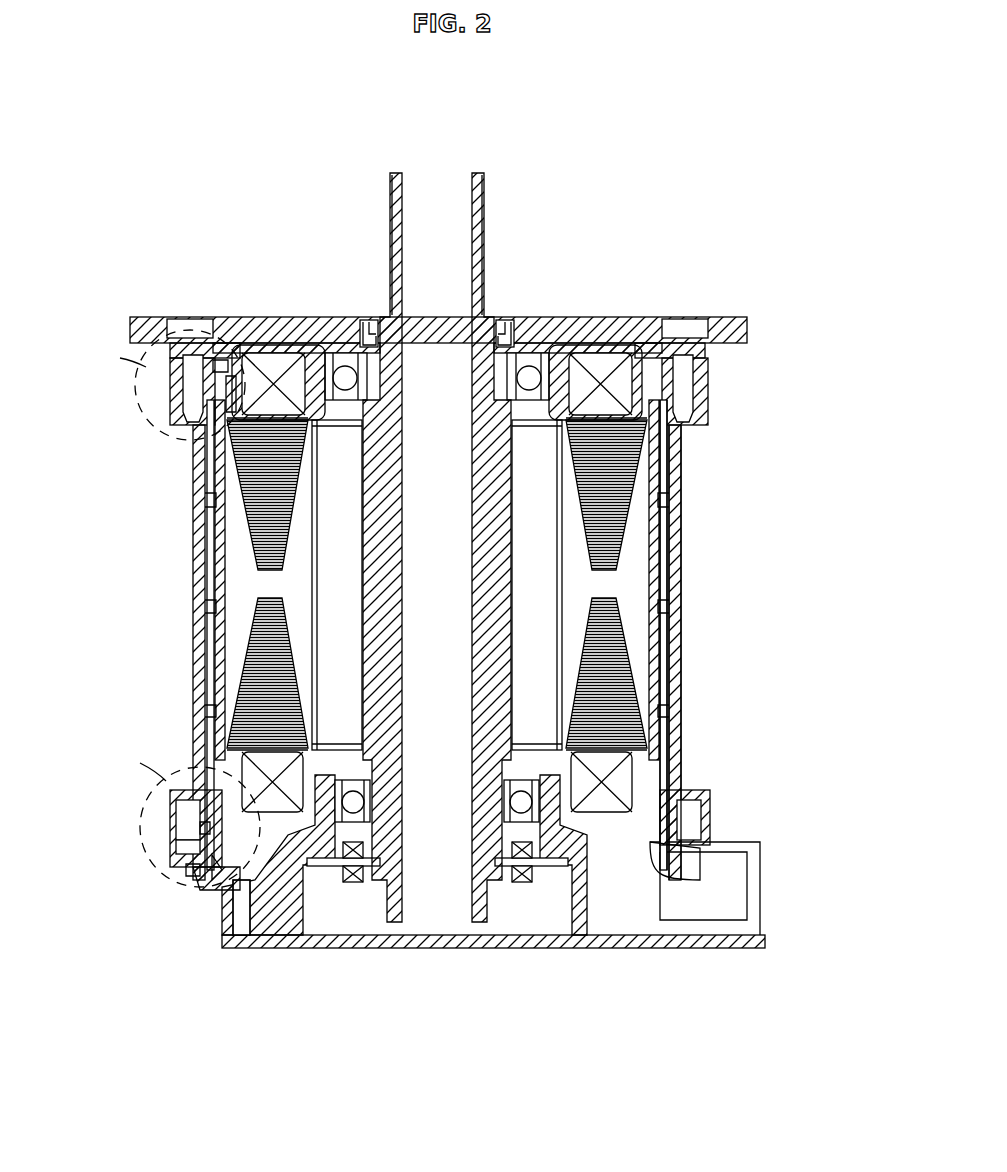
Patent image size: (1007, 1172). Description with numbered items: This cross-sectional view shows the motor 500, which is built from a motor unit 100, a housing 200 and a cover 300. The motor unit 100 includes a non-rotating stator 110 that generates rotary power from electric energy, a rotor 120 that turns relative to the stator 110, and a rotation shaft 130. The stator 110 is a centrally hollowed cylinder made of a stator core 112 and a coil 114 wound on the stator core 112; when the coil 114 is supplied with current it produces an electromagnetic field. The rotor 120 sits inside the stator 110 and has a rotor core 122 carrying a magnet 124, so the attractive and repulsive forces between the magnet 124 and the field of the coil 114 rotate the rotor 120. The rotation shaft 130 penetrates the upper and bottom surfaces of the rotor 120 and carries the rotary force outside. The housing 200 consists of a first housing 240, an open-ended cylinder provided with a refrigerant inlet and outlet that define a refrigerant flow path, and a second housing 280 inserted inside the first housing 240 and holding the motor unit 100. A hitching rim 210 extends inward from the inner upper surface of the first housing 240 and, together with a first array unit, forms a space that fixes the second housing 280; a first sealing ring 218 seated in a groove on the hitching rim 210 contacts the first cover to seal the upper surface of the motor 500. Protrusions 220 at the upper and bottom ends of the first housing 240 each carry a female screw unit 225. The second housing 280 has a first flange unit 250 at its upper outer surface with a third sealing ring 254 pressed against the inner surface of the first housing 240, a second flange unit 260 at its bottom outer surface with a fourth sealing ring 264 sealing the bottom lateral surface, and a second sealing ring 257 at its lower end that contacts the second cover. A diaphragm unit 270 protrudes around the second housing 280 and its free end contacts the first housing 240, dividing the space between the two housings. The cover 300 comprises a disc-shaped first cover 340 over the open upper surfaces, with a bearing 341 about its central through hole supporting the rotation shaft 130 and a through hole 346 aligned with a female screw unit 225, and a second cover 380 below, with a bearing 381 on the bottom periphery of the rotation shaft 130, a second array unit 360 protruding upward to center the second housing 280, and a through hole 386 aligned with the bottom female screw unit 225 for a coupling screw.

The motor 500 is at (632, 178).
The cover 300 is at (616, 298).
The first cover 340 is at (554, 328).
The bearing 341 is at (511, 380).
The through hole 346 is at (186, 330).
The second cover 380 is at (340, 962).
The bearing 381 is at (522, 870).
The second array unit 360 is at (243, 932).
The motor unit 100 is at (634, 590).
The rotation shaft 130 is at (460, 612).
The rotor 120 is at (812, 490).
The rotor core 122 is at (512, 470).
The magnet 124 is at (555, 496).
The stator 110 is at (112, 515).
The coil 114 is at (272, 412).
The stator core 112 is at (246, 584).
The housing 200 is at (803, 720).
The first flange unit 250 is at (222, 415).
The hitching rim 210 is at (263, 400).
The first sealing ring 218 is at (216, 370).
The third sealing ring 254 is at (237, 382).
The protrusion 220 is at (190, 383).
The female screw unit 225 is at (186, 406).
The fourth sealing ring 264 is at (186, 828).
The second flange unit 260 is at (226, 782).
The diaphragm unit 270 is at (668, 608).
The first housing 240 is at (683, 746).
The second housing 280 is at (668, 770).
The through hole 386 is at (188, 870).
The second sealing ring 257 is at (216, 862).